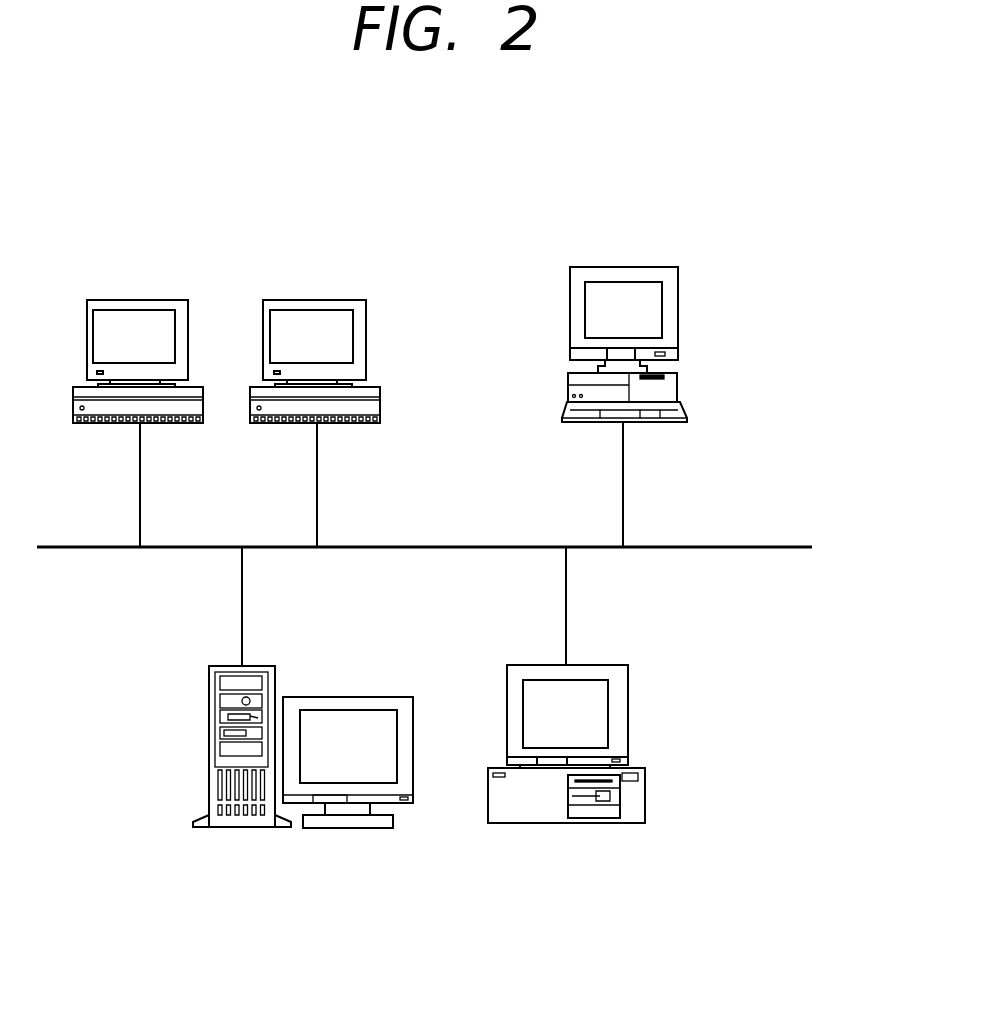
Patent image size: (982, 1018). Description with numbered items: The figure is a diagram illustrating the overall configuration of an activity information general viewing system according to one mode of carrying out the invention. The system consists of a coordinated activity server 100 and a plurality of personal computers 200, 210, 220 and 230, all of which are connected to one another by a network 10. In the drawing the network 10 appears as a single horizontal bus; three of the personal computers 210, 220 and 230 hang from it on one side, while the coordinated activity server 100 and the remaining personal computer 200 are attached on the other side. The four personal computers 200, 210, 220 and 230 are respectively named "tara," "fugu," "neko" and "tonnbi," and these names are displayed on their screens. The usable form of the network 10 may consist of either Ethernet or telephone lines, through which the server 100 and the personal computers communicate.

The network 10 is at (710, 545).
The coordinated activity server 100 is at (235, 830).
The personal computer 200 is at (545, 823).
The personal computer 210 is at (152, 300).
The personal computer 220 is at (335, 300).
The personal computer 230 is at (648, 267).